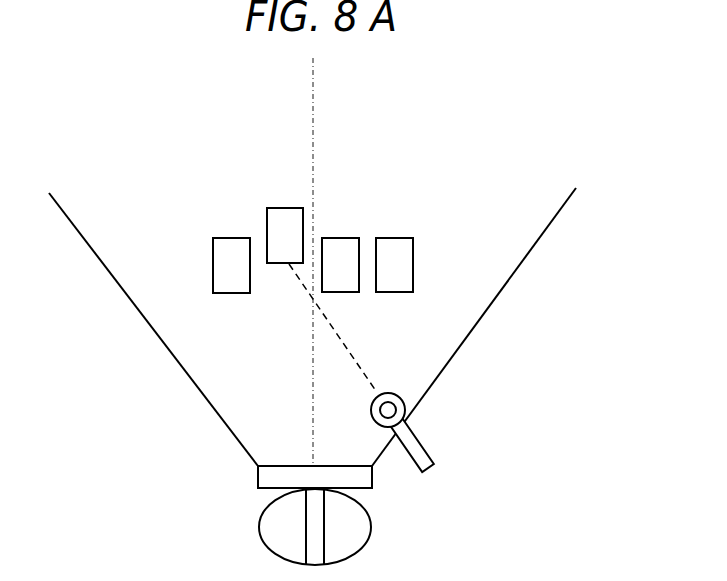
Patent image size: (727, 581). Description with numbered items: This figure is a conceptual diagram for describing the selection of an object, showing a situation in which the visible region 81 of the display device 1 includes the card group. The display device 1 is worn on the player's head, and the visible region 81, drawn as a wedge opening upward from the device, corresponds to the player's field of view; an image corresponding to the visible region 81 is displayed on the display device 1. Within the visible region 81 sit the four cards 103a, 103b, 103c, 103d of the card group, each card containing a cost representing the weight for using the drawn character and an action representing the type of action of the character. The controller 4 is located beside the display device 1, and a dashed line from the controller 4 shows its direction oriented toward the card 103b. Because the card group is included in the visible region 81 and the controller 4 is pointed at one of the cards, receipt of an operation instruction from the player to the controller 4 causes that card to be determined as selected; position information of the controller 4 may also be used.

The display device 1 is at (258, 477).
The controller 4 is at (423, 437).
The visible region 81 is at (511, 278).
The card 103a is at (225, 238).
The card 103b is at (288, 208).
The card 103c is at (345, 220).
The card 103d is at (400, 238).